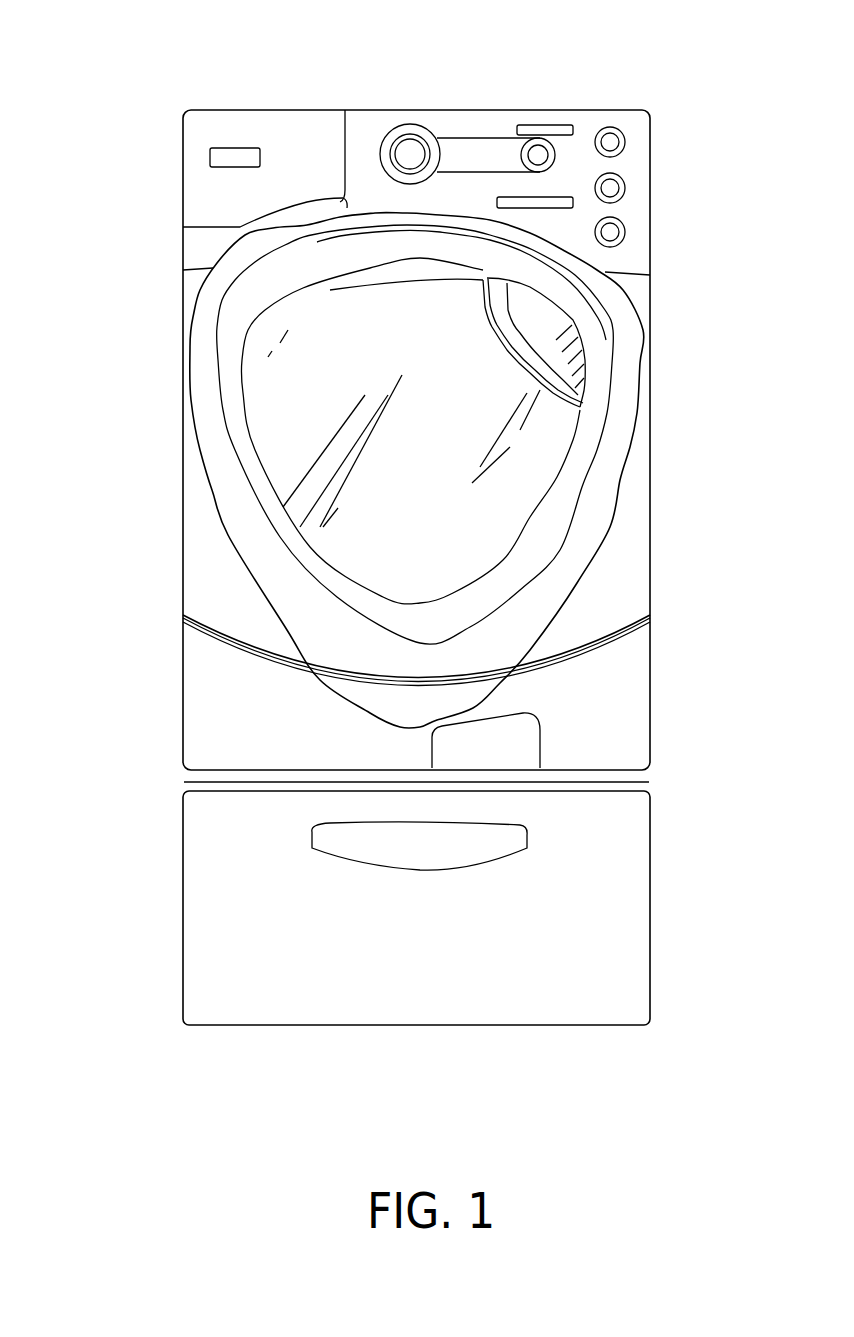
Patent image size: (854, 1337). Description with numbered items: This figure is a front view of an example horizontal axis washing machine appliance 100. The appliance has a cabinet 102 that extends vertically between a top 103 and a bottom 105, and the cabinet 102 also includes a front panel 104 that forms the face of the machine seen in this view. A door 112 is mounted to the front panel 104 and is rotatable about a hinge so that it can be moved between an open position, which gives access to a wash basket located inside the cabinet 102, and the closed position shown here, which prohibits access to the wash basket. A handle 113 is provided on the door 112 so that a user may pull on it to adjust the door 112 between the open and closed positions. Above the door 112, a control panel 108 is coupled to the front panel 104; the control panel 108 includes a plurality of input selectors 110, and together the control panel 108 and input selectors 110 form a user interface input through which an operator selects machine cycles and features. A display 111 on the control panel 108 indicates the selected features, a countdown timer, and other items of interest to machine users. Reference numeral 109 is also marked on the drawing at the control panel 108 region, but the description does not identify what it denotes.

The washing machine appliance 100 is at (397, 516).
The cabinet 102 is at (655, 722).
The top 103 is at (672, 108).
The front panel 104 is at (200, 577).
The bottom 105 is at (672, 1012).
The control panel 108 is at (553, 97).
The display 109 is at (295, 135).
The input selectors 110 is at (407, 153).
The display 111 is at (475, 150).
The door 112 is at (583, 462).
The handle 113 is at (583, 353).